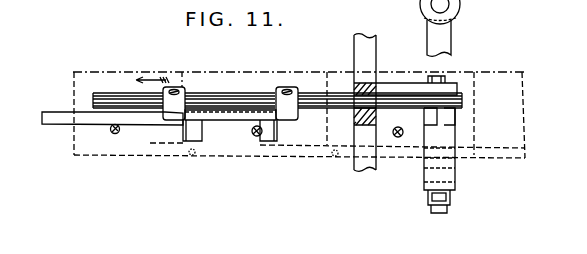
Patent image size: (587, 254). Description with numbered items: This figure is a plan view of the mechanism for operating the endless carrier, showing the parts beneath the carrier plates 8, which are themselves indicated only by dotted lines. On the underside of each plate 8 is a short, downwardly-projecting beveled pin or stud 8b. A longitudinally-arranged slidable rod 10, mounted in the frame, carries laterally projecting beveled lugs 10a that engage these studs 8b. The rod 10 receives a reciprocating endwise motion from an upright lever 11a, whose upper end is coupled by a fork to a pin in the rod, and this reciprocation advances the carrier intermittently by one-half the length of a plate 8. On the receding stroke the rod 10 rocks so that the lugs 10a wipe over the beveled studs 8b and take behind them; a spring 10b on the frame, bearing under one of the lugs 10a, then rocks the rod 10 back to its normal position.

The plates 8 is at (128, 71).
The beveled pin or stud 8b is at (110, 130).
The slidable rod 10 is at (230, 103).
The lugs 10a is at (182, 133).
The spring 10b is at (62, 118).
The upright lever 11a is at (447, 140).